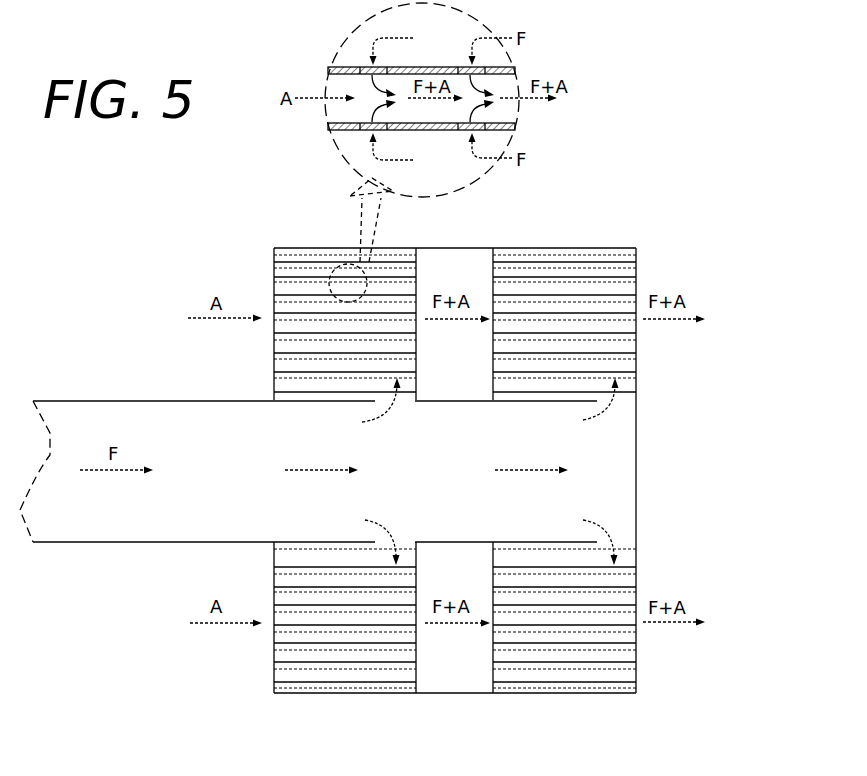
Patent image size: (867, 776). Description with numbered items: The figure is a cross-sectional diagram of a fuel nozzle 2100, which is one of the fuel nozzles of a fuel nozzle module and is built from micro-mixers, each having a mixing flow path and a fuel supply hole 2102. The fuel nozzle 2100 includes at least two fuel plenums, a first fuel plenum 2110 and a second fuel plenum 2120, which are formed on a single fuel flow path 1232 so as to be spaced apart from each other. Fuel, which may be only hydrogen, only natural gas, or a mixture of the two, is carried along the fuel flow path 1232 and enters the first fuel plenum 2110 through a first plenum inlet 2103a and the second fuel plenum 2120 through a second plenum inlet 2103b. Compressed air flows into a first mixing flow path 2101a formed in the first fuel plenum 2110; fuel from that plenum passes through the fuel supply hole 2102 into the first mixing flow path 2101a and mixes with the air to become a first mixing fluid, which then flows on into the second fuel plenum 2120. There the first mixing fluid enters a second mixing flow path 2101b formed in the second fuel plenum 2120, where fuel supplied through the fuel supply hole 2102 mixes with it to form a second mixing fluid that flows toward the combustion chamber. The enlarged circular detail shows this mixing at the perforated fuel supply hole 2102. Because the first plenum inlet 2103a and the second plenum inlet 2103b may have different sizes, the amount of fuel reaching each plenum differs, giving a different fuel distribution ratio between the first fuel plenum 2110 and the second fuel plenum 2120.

The fuel nozzle 2100 is at (196, 215).
The first mixing flow path 2101a is at (344, 281).
The second mixing flow path 2101b is at (556, 287).
The fuel supply hole 2102 is at (363, 68).
The first plenum inlet 2103a is at (400, 403).
The second plenum inlet 2103b is at (620, 403).
The first fuel plenum 2110 is at (274, 673).
The second fuel plenum 2120 is at (636, 675).
The fuel flow path 1232 is at (127, 400).